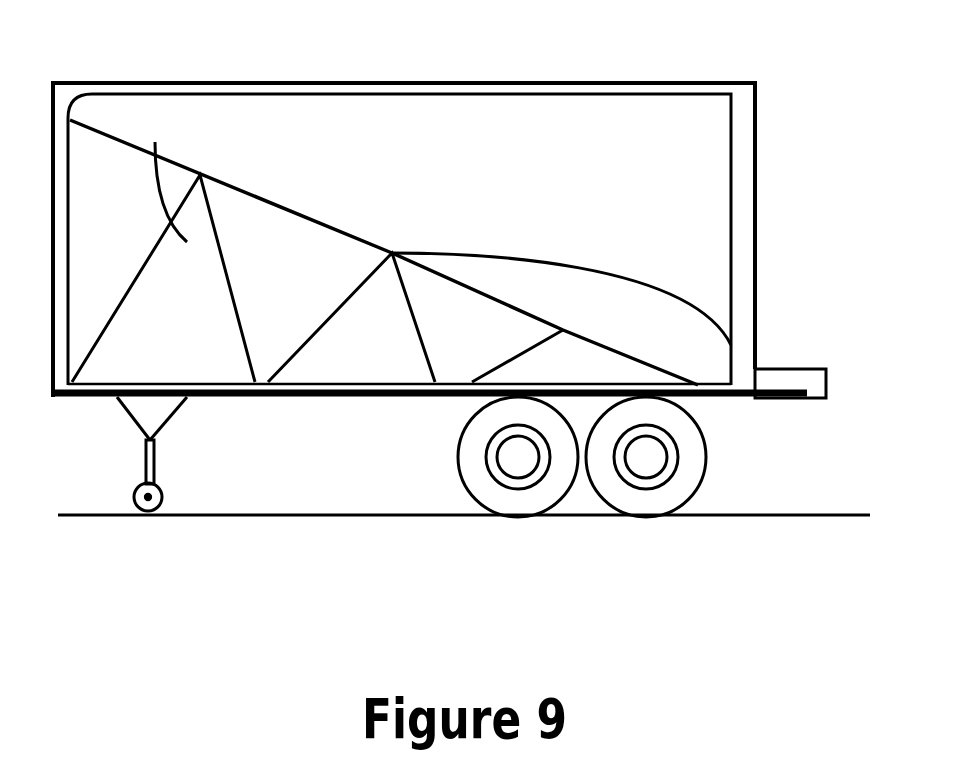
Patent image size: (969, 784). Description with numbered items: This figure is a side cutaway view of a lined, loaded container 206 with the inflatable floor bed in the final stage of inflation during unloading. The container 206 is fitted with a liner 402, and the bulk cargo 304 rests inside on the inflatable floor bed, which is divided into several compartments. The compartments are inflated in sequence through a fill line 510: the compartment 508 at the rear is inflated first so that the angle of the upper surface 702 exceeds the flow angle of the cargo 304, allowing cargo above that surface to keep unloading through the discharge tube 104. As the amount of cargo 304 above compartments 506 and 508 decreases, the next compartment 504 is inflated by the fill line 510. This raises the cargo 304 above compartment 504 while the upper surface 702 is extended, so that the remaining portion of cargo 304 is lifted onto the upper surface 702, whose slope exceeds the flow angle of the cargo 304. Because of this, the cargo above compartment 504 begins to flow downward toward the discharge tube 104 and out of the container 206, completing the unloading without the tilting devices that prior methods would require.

The container 206 is at (333, 82).
The liner 402 is at (413, 95).
The compartment 504 is at (250, 220).
The cargo 304 is at (697, 337).
The upper surface 702 is at (345, 230).
The compartment 508 is at (637, 375).
The compartment 506 is at (447, 350).
The discharge tube 104 is at (777, 378).
The fill line 510 is at (765, 385).